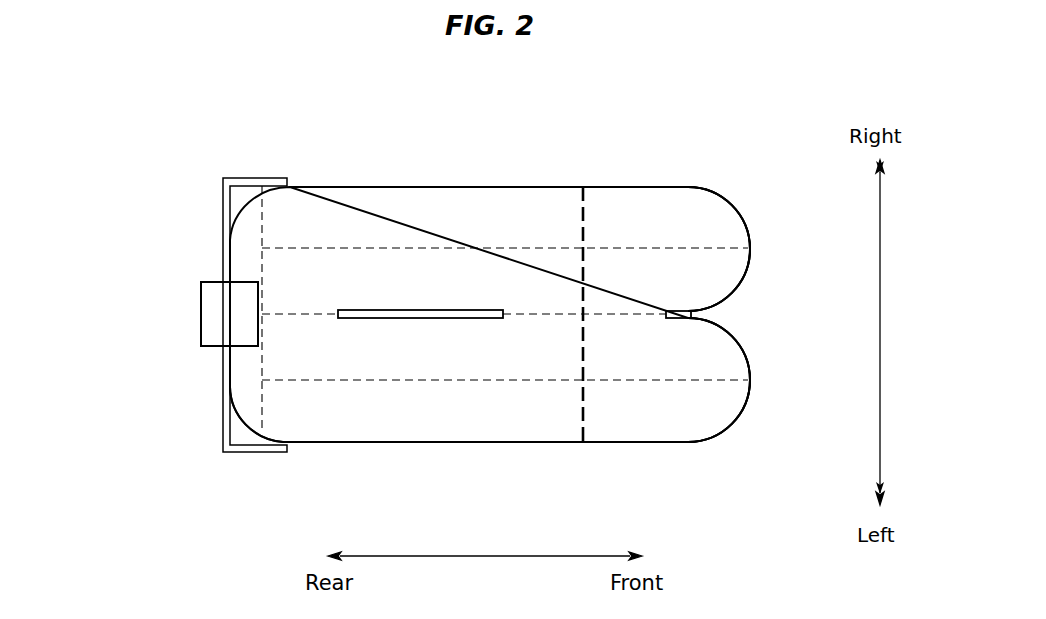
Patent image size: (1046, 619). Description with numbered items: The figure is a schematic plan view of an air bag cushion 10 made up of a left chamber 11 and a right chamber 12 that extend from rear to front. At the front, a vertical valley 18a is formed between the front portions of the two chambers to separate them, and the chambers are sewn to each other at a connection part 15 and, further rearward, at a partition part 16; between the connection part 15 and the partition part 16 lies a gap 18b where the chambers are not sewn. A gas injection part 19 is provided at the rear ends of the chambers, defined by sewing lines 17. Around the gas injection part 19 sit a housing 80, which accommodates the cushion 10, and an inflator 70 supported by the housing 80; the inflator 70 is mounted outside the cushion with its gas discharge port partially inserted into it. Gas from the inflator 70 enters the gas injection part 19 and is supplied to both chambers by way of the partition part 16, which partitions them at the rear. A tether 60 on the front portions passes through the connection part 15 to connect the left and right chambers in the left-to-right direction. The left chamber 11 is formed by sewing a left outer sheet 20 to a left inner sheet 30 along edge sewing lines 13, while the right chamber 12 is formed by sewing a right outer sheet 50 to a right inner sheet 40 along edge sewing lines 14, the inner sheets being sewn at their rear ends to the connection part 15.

The air bag cushion 10 is at (520, 165).
The left chamber 11 is at (717, 443).
The right chamber 12 is at (715, 187).
The edge sewing lines 13 is at (408, 383).
The edge sewing lines 14 is at (438, 248).
The connection part 15 is at (618, 316).
The partition part 16 is at (293, 316).
The sewing lines 17 is at (261, 232).
The vertical valley 18a is at (688, 315).
The gap 18b is at (366, 318).
The gas injection part 19 is at (248, 383).
The left outer sheet 20 is at (733, 402).
The left inner sheet 30 is at (733, 355).
The right inner sheet 40 is at (733, 273).
The right outer sheet 50 is at (733, 225).
The tether 60 is at (587, 222).
The inflator 70 is at (200, 314).
The housing 80 is at (218, 198).